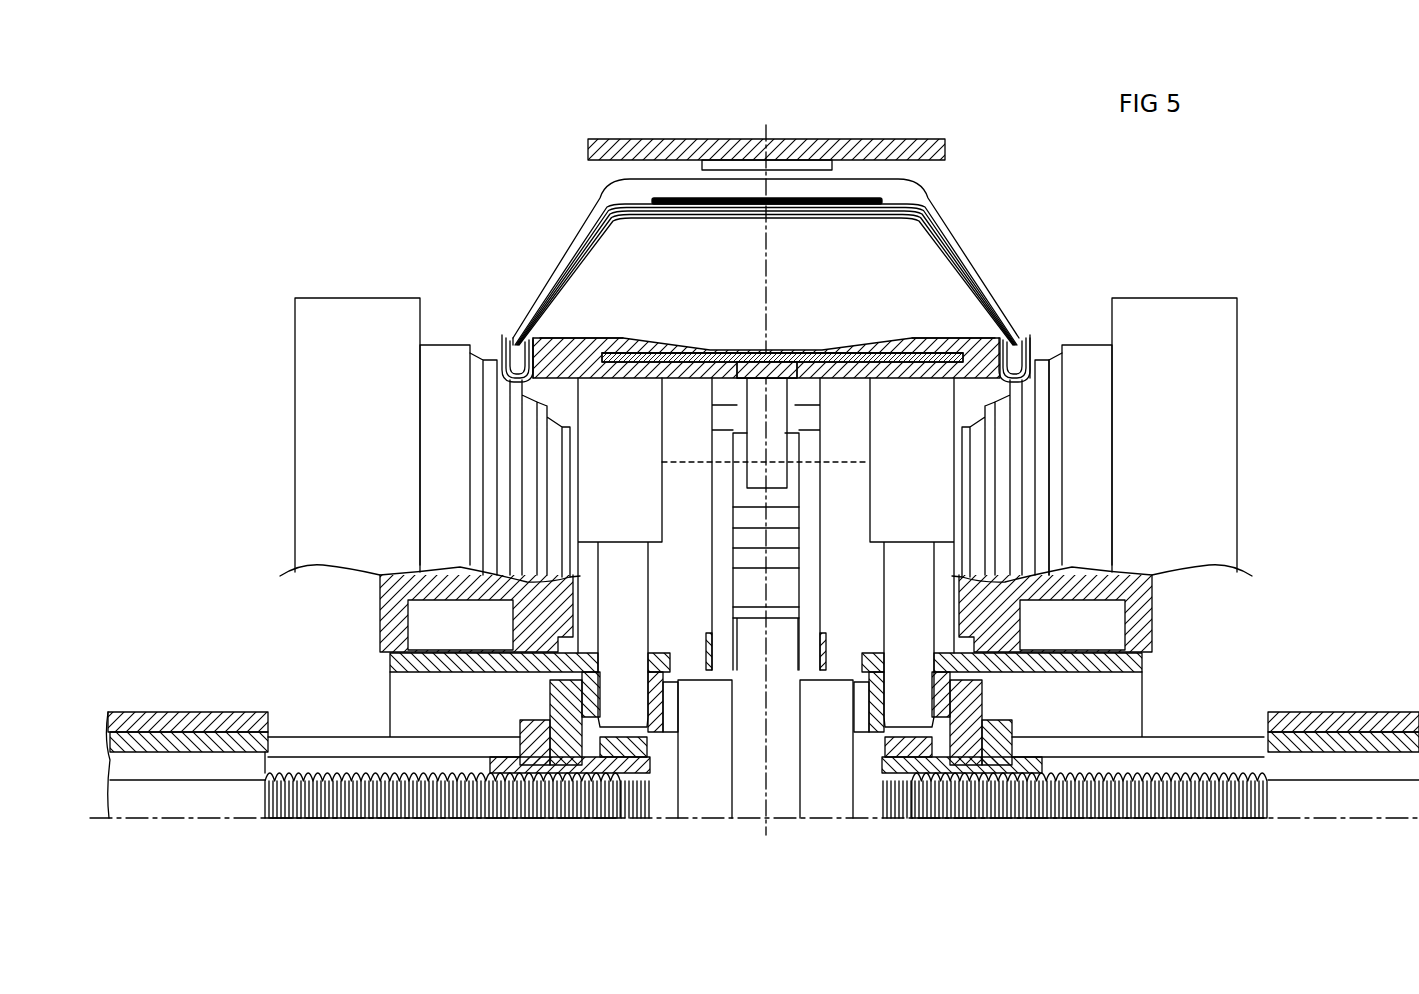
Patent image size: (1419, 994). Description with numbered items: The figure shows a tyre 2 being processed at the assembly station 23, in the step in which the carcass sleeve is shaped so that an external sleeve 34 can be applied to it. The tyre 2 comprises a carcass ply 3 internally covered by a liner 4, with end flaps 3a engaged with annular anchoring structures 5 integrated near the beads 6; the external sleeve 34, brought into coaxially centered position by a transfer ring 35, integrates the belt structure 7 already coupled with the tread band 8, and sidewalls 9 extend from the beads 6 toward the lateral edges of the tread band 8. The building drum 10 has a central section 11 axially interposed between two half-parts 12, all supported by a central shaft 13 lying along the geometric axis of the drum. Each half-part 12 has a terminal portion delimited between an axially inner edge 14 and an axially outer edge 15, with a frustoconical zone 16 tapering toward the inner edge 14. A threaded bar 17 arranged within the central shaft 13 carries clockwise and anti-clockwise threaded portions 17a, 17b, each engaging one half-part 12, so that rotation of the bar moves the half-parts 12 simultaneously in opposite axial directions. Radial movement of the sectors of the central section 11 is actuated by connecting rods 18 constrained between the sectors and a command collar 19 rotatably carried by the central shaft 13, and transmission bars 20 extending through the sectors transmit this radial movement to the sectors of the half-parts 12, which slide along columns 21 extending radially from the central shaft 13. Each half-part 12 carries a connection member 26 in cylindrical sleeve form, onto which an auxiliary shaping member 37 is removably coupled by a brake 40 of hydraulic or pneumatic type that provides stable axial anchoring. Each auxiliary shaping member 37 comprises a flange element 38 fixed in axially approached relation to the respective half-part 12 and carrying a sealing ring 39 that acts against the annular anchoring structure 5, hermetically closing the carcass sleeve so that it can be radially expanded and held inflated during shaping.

The tyre 2 is at (554, 184).
The carcass ply 3 is at (572, 290).
The end flap 3a is at (512, 352).
The liner 4 is at (607, 232).
The annular anchoring structure 5 is at (1035, 328).
The bead 6 is at (1051, 356).
The belt structure 7 is at (863, 198).
The tread band 8 is at (926, 190).
The sidewall 9 is at (582, 200).
The building drum 10 is at (852, 296).
The central section 11 is at (782, 362).
The half-part 12 is at (622, 347).
The central shaft 13 is at (1330, 746).
The axially inner edge 14 is at (718, 353).
The axially outer edge 15 is at (521, 350).
The frustoconical zone 16 is at (670, 350).
The threaded bar 17 is at (1347, 803).
The threaded portion 17a is at (531, 821).
The threaded portion 17b is at (1023, 807).
The connecting rod 18 is at (813, 552).
The command collar 19 is at (823, 797).
The transmission bar 20 is at (723, 420).
The column 21 is at (627, 593).
The assembly station 23 is at (284, 852).
The connection member 26 is at (1127, 667).
The external sleeve 34 is at (667, 150).
The transfer ring 35 is at (913, 150).
The auxiliary shaping member 37 is at (445, 332).
The flange element 38 is at (334, 318).
The sealing ring 39 is at (486, 352).
The brake 40 is at (766, 613).